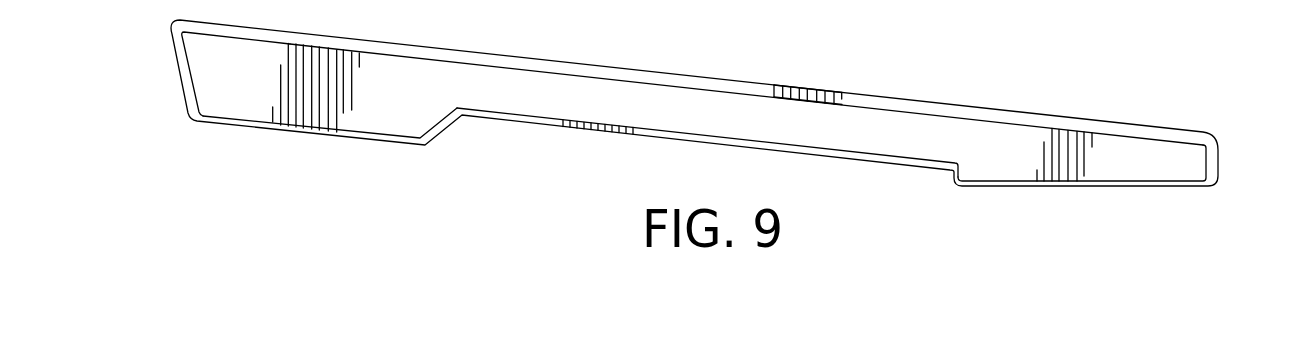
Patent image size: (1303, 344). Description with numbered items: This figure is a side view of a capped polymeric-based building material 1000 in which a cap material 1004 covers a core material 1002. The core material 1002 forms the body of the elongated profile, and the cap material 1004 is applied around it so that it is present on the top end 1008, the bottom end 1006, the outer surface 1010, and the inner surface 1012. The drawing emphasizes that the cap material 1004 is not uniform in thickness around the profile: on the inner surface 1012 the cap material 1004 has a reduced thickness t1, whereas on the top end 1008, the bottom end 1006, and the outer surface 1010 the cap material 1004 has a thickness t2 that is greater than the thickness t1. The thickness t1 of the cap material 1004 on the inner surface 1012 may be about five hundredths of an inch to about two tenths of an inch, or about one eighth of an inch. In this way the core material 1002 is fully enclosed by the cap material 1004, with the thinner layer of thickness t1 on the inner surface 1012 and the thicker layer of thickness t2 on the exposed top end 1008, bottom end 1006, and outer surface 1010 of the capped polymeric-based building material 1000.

The capped polymeric-based building material 1000 is at (1075, 41).
The core material 1002 is at (383, 122).
The cap material 1004 is at (528, 60).
The bottom end 1006 is at (161, 74).
The top end 1008 is at (1241, 139).
The outer surface 1010 is at (671, 57).
The inner surface 1012 is at (558, 137).
The thickness of cap material on inner surface t1 is at (1153, 155).
The thickness of cap material on top end, bottom end, and outer surface t2 is at (1180, 158).